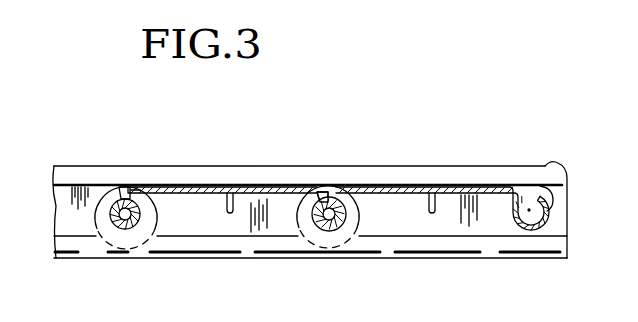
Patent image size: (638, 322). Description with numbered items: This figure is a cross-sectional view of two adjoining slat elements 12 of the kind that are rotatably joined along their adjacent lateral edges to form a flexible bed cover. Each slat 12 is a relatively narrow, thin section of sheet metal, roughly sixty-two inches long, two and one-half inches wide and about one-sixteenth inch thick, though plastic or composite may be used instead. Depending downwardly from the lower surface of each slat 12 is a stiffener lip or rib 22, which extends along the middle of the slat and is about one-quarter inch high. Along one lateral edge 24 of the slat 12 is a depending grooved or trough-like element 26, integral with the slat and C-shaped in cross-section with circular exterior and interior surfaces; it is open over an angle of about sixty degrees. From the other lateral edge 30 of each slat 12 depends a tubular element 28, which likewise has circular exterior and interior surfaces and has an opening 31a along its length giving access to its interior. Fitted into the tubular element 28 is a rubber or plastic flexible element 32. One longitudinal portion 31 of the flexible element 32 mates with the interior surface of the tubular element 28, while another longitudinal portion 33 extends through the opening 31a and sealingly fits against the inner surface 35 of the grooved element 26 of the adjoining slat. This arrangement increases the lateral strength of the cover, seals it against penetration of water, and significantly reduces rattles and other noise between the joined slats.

The slat element 12 is at (205, 189).
The stiffener lip or rib 22 is at (227, 212).
The lateral edge 24 is at (319, 191).
The grooved element 26 is at (324, 231).
The tubular element 28 is at (130, 231).
The lateral edge 30 is at (127, 186).
The longitudinal portion 31 is at (146, 214).
The opening 31a is at (121, 222).
The flexible element 32 is at (123, 226).
The longitudinal portion 33 is at (110, 217).
The inner surface 35 is at (556, 176).